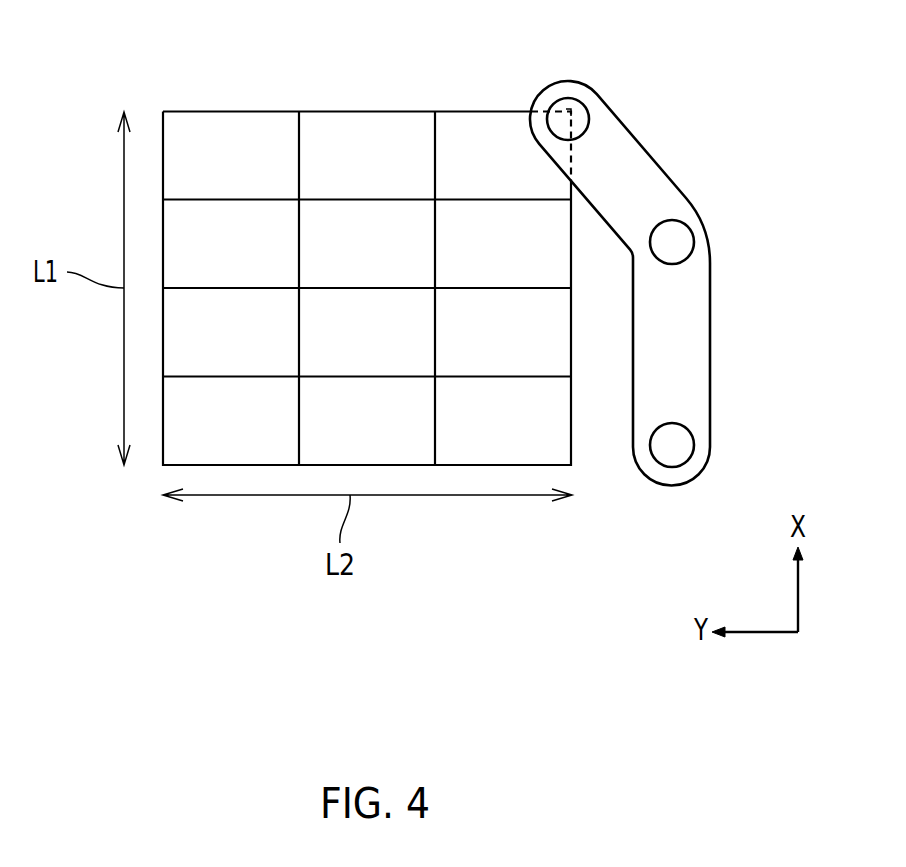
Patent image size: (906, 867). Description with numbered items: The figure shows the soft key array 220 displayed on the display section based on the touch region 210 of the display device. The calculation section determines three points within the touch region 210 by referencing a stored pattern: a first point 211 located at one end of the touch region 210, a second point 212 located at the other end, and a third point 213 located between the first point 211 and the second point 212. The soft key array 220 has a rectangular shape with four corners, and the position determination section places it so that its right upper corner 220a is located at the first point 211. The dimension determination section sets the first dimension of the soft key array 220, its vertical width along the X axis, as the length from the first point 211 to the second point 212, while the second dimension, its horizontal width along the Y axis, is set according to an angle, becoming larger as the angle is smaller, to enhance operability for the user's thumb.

The touch region 210 is at (642, 145).
The first point 211 is at (556, 97).
The second point 212 is at (693, 438).
The third point 213 is at (682, 263).
The soft key array 220 is at (394, 111).
The right upper corner 220a is at (577, 100).